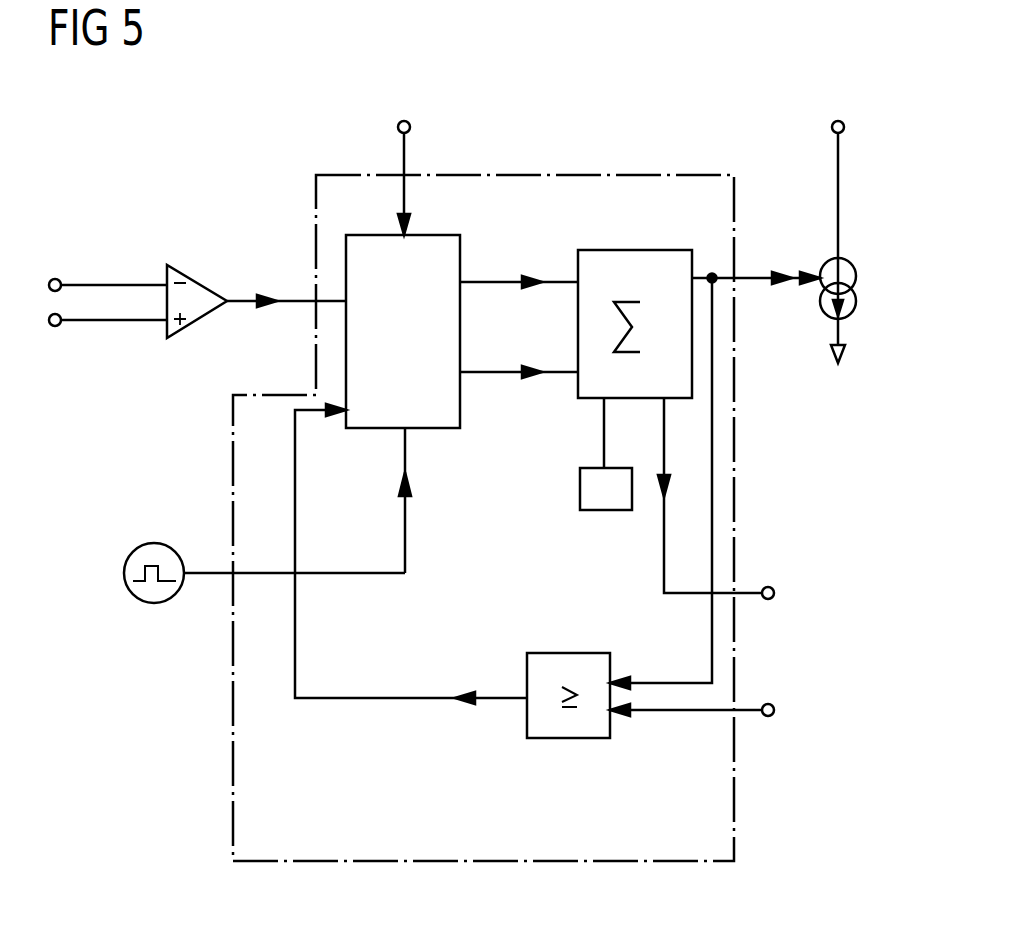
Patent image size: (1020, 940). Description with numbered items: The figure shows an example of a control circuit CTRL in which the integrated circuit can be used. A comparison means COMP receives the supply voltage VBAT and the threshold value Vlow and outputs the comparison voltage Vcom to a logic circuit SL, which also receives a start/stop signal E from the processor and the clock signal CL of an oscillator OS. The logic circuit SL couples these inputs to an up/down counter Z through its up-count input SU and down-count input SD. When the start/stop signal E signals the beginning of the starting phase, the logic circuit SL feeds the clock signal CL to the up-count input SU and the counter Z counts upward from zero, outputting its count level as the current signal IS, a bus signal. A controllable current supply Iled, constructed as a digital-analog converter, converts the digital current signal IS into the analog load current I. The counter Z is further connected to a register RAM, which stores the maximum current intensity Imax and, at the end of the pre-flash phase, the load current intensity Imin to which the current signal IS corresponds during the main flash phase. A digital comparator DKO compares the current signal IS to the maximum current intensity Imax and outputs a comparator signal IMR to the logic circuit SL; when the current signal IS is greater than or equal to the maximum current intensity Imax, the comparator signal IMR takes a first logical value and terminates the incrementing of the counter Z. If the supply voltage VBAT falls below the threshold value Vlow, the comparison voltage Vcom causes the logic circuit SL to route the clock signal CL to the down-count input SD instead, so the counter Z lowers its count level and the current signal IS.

The control circuit CTRL is at (672, 173).
The supply voltage VBAT is at (105, 263).
The threshold value Vlow is at (108, 349).
The comparison means COMP is at (200, 318).
The comparison voltage Vcom is at (286, 284).
The start/stop signal E is at (419, 171).
The logic circuit SL is at (460, 407).
The up-count input SU is at (519, 259).
The down-count input SD is at (519, 352).
The counter Z is at (692, 362).
The current signal IS is at (741, 292).
The load current I is at (855, 242).
The controllable current supply Iled is at (820, 290).
The clock signal CL is at (426, 500).
The oscillator OS is at (125, 580).
The register RAM is at (608, 512).
The load current intensity Imin is at (746, 498).
The maximum current intensity Imax is at (727, 696).
The digital comparator DKO is at (565, 740).
The comparator signal IMR is at (411, 575).